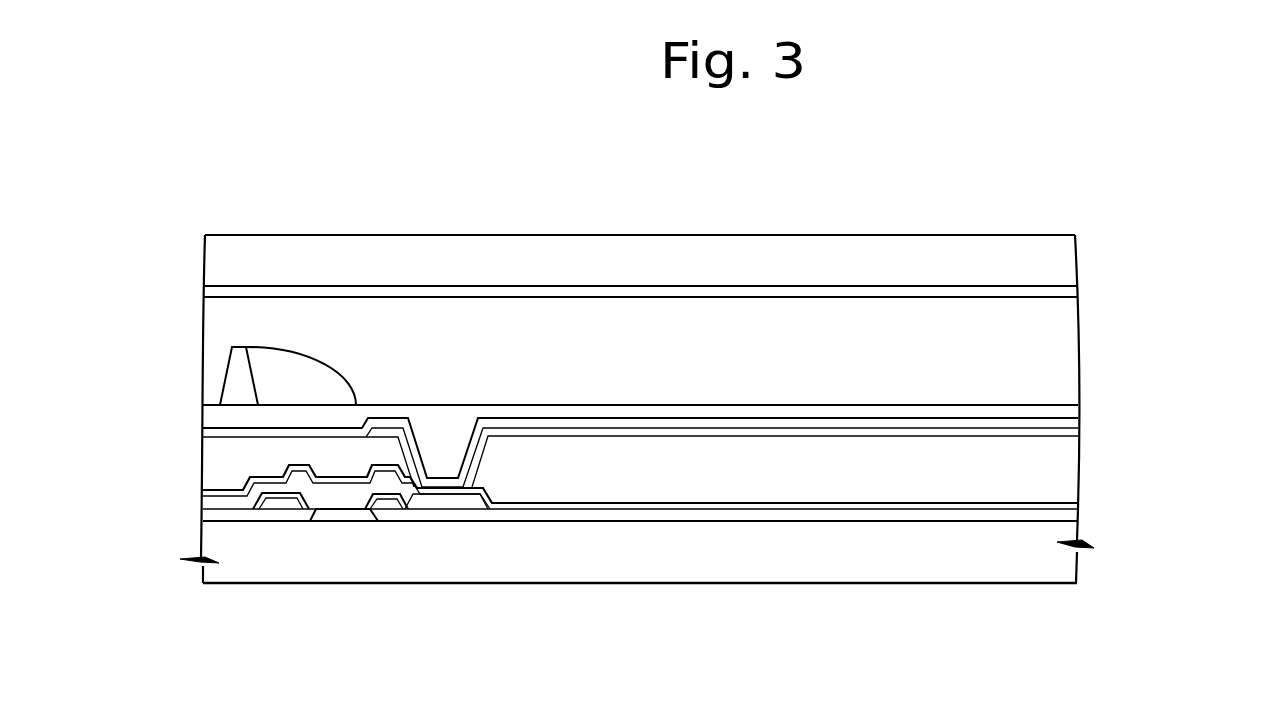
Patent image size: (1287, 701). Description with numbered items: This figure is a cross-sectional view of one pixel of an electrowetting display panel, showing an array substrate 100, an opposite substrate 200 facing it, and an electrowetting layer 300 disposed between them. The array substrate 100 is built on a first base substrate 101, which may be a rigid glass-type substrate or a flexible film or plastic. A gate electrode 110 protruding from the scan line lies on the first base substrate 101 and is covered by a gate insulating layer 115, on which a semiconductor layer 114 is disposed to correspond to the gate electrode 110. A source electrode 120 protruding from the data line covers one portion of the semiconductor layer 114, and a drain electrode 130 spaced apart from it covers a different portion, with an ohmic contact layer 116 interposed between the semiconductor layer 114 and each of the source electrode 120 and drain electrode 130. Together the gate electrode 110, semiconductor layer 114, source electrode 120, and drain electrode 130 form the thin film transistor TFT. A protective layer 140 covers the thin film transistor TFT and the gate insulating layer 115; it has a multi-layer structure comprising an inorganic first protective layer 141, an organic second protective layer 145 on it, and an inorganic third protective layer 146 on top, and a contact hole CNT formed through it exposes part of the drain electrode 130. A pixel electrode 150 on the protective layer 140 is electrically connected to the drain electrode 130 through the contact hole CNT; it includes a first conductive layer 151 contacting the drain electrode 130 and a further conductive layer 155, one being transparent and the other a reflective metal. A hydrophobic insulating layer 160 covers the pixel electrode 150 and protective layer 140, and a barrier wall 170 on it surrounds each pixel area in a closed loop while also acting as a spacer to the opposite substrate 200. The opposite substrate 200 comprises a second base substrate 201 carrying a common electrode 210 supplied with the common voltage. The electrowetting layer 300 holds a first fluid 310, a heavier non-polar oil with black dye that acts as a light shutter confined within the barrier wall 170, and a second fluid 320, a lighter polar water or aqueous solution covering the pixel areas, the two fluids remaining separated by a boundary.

The array substrate 100 is at (1213, 360).
The first base substrate 101 is at (1063, 540).
The gate electrode 110 is at (348, 517).
The semiconductor layer 114 is at (297, 505).
The gate insulating layer 115 is at (1063, 515).
The ohmic contact layer 116 is at (285, 498).
The source electrode 120 is at (272, 490).
The drain electrode 130 is at (473, 503).
The protective layer 140 is at (1158, 427).
The first protective layer 141 is at (1063, 504).
The second protective layer 145 is at (1067, 470).
The third protective layer 146 is at (1063, 433).
The pixel electrode 150 is at (952, 643).
The first conductive layer 151 is at (827, 428).
The second electrode layer 155 is at (910, 420).
The hydrophobic insulating layer 160 is at (1059, 410).
The barrier wall 170 is at (233, 383).
The opposite substrate 200 is at (1158, 243).
The second base substrate 201 is at (1066, 254).
The common electrode 210 is at (1064, 290).
The electrowetting layer 300 is at (123, 280).
The first fluid 310 is at (277, 358).
The second fluid 320 is at (215, 318).
The contact hole CNT is at (482, 457).
The thin film transistor TFT is at (527, 645).